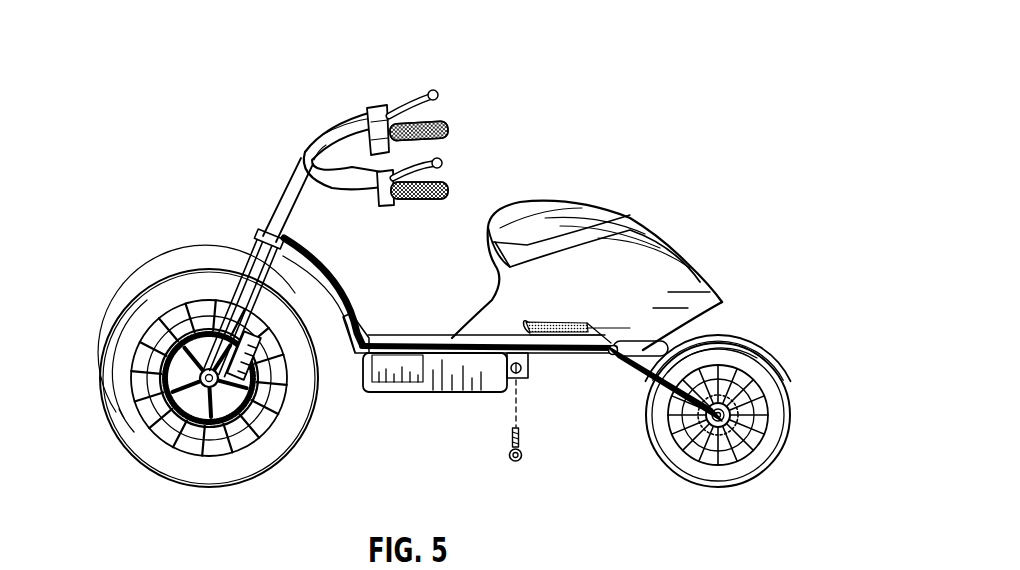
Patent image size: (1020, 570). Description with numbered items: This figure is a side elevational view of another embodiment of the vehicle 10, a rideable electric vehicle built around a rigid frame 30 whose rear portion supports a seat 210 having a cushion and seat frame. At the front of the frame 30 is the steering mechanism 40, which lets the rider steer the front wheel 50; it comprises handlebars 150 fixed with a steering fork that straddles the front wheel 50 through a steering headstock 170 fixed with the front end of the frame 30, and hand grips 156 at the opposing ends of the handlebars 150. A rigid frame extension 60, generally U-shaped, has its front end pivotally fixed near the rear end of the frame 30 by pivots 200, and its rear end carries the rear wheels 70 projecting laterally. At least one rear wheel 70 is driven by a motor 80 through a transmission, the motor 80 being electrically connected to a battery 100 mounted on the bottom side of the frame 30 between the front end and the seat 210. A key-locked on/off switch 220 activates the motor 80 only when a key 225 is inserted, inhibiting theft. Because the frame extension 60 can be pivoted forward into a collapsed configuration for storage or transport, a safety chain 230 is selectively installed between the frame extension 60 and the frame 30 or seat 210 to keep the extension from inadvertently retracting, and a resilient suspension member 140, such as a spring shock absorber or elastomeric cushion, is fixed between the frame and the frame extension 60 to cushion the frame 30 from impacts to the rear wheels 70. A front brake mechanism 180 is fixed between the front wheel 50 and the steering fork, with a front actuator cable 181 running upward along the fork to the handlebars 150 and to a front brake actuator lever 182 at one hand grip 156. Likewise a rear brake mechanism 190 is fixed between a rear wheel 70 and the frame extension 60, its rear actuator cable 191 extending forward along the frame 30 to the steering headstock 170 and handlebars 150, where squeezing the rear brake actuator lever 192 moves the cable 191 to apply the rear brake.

The vehicle 10 is at (128, 35).
The rigid frame 30 is at (510, 342).
The steering mechanism 40 is at (356, 100).
The front wheel 50 is at (124, 312).
The rigid frame extension 60 is at (626, 360).
The rear wheels 70 is at (742, 347).
The motor 80 is at (292, 402).
The battery 100 is at (482, 393).
The resilient suspension member 140 is at (668, 332).
The handlebars 150 is at (312, 150).
The hand grips 156 is at (440, 125).
The steering headstock 170 is at (268, 245).
The front brake mechanism 180 is at (335, 393).
The front actuator cable 181 is at (302, 216).
The front brake actuator lever 182 is at (444, 175).
The rear brake mechanism 190 is at (767, 435).
The rear actuator cable 191 is at (352, 117).
The rear brake actuator lever 192 is at (405, 105).
The pivots 200 is at (616, 346).
The seat 210 is at (527, 203).
The on/off switch 220 is at (528, 378).
The key 225 is at (522, 457).
The safety chain 230 is at (550, 322).